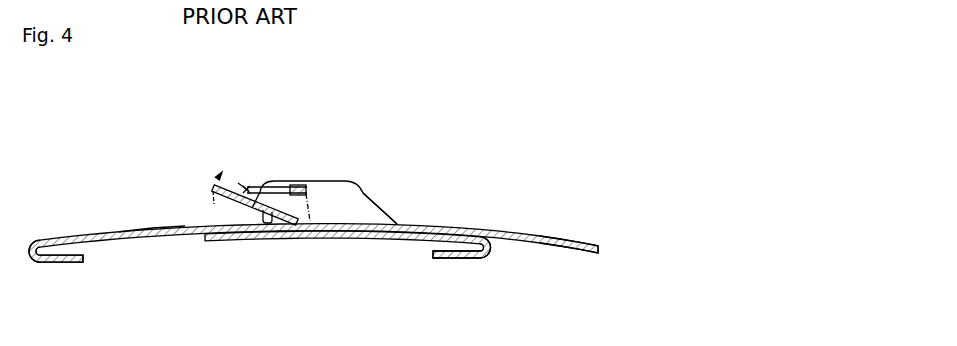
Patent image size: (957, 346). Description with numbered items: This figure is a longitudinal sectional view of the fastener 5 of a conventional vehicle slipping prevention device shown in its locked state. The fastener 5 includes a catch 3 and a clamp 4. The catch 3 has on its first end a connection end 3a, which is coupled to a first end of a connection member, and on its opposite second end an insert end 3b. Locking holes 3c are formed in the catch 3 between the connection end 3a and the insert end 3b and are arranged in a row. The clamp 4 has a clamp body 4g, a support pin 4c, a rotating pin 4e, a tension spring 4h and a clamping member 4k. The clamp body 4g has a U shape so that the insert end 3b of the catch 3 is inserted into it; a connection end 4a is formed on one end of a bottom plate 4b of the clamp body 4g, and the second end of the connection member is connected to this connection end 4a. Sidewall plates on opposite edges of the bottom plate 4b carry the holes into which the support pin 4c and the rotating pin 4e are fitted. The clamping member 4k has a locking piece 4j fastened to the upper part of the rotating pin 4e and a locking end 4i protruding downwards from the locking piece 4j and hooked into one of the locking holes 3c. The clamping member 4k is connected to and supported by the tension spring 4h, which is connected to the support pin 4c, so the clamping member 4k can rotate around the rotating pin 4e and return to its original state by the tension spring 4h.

The catch 3 is at (98, 229).
The connection end 3a is at (53, 238).
The insert end 3b is at (575, 240).
The locking holes 3c is at (185, 225).
The clamp 4 is at (352, 176).
The connection end 4a is at (458, 259).
The bottom plate 4b is at (377, 240).
The support pin 4c is at (310, 186).
The rotating pin 4e is at (271, 240).
The clamp body 4g is at (376, 222).
The tension spring 4h is at (298, 184).
The locking end 4i is at (265, 187).
The locking piece 4j is at (212, 189).
The clamping member 4k is at (244, 186).
The fastener 5 is at (178, 130).